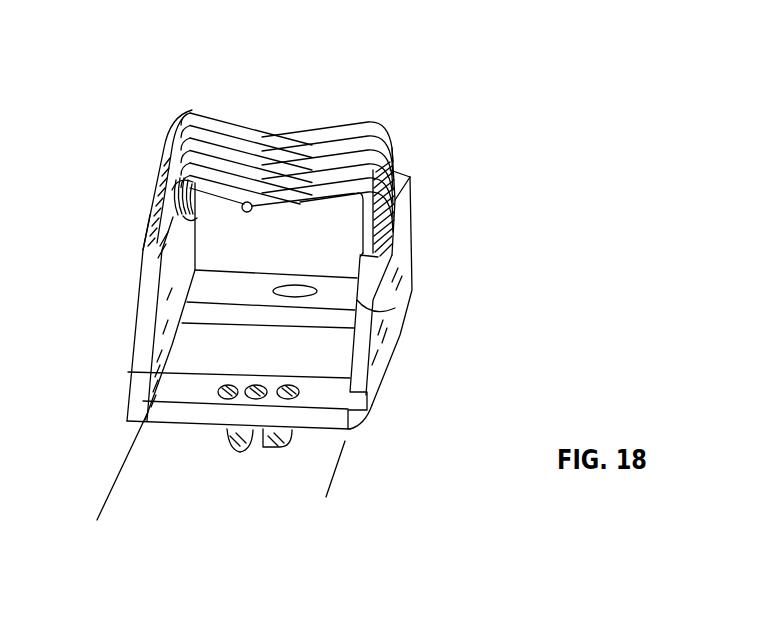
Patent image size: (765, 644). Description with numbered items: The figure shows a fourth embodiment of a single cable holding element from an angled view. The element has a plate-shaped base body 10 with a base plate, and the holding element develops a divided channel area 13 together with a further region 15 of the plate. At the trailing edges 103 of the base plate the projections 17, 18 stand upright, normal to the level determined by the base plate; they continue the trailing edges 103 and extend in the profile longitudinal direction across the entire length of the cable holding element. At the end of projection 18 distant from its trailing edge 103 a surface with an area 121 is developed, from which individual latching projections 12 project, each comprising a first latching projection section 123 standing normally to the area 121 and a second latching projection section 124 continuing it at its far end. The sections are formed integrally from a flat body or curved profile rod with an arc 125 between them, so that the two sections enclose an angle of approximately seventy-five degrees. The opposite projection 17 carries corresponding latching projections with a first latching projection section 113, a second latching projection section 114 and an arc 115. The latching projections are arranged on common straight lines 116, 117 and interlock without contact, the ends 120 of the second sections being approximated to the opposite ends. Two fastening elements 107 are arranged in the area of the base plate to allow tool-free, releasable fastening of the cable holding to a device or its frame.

The latching projection 12 is at (388, 116).
The base body 10 is at (170, 425).
The channel area 13 is at (296, 260).
The second panel 15 is at (280, 365).
The projection 17 is at (184, 258).
The projection 18 is at (397, 270).
The trailing edge 103 is at (108, 498).
The fastening element 107 is at (307, 287).
The first latching projection section 113 is at (196, 213).
The second latching projection section 114 is at (244, 127).
The arc 115 is at (194, 112).
The common straight line 116 is at (375, 302).
The common straight line 117 is at (118, 340).
The end 120 is at (302, 223).
The area 121 is at (410, 177).
The first latching projection section 123 is at (392, 163).
The second latching projection section 124 is at (341, 132).
The arc 125 is at (393, 130).